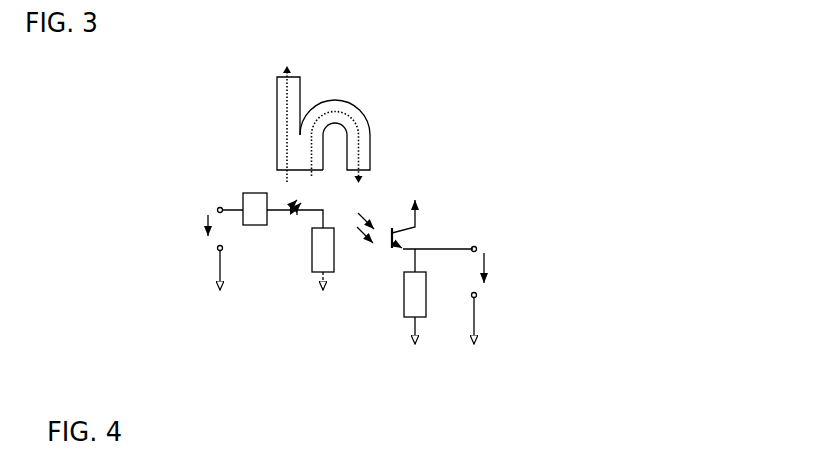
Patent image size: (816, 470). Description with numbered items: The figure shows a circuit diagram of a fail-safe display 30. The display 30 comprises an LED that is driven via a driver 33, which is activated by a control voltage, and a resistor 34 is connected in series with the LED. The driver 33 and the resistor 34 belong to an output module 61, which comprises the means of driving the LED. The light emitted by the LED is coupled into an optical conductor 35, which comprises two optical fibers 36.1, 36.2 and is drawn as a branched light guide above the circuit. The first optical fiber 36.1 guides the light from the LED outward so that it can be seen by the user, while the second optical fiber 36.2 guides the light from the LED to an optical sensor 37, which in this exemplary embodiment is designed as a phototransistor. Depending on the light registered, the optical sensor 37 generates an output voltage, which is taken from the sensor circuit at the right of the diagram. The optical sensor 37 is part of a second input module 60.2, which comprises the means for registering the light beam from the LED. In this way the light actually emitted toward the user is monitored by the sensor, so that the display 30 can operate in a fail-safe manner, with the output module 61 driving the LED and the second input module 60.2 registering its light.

The display 30 is at (228, 119).
The optical conductor 35 is at (268, 87).
The first optical fiber 36.1 is at (300, 97).
The second optical fiber 36.2 is at (370, 125).
The driver 33 is at (247, 193).
The resistor 34 is at (310, 265).
The optical sensor 37 is at (385, 230).
The second input module 60.2 is at (506, 233).
The output module 61 is at (173, 300).